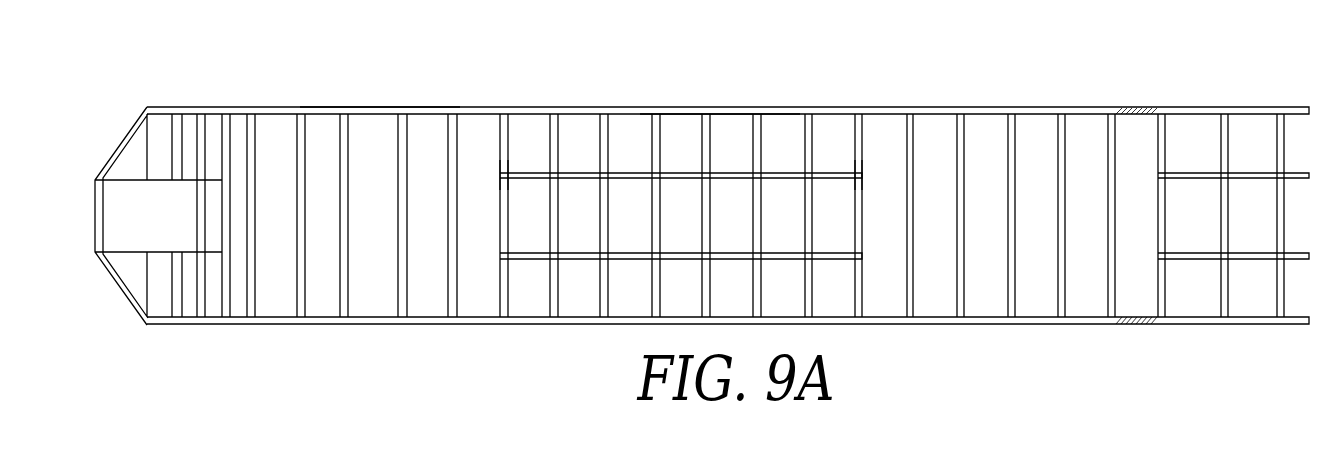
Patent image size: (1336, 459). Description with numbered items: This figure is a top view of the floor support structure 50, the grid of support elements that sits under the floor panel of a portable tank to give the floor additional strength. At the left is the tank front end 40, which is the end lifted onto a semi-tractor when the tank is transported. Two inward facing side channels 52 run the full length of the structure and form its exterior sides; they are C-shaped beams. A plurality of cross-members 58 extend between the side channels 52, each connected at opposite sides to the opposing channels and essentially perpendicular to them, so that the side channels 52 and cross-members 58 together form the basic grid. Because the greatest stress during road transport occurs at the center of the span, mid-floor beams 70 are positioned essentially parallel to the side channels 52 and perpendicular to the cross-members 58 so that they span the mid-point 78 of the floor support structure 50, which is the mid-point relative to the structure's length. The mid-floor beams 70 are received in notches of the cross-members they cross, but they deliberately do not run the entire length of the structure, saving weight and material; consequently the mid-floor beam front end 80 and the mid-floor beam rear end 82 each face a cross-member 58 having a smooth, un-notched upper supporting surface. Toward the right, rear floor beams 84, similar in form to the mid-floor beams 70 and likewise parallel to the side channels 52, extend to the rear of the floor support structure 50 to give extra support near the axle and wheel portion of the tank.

The tank front end 40 is at (74, 156).
The floor support structure 50 is at (770, 71).
The side channels 52 is at (378, 110).
The cross-members 58 is at (340, 140).
The mid-floor beams 70 is at (580, 172).
The mid-point 78 is at (718, 108).
The mid-floor beam front end 80 is at (497, 173).
The mid-floor beam rear end 82 is at (862, 175).
The rear floor beams 84 is at (1188, 175).